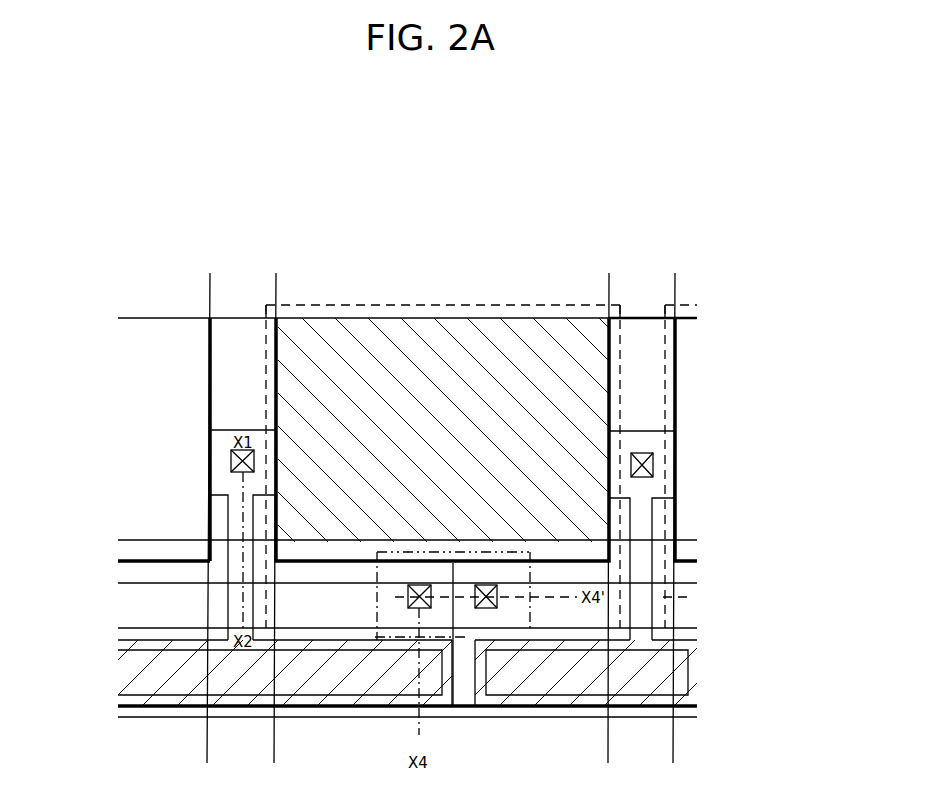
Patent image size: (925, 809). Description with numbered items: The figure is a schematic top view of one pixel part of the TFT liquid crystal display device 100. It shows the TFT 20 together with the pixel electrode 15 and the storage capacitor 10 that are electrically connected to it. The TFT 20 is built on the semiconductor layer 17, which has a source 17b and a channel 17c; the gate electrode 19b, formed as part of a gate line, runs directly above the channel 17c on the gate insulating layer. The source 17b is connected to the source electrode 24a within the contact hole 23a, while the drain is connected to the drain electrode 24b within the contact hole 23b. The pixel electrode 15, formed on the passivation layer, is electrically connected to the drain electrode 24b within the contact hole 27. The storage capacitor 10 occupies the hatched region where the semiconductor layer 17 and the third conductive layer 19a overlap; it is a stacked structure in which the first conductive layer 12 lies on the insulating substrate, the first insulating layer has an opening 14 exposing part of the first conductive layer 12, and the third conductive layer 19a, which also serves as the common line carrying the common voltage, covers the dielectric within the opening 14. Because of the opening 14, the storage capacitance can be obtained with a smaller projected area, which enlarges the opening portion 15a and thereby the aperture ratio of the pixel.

The TFT liquid crystal display device 100 is at (658, 261).
The source electrode 24a is at (216, 290).
The opening portion 15a is at (481, 328).
The pixel electrode 15 is at (620, 393).
The source 17b is at (228, 485).
The contact hole 23a is at (231, 461).
The channel 17c is at (237, 532).
The TFT 20 is at (220, 552).
The gate electrode 19b is at (128, 548).
The first conductive layer 12 is at (128, 578).
The third conductive layer 19a is at (128, 633).
The contact hole 23b is at (432, 592).
The contact hole 27 is at (497, 590).
The drain electrode 24b is at (530, 617).
The semiconductor layer 17 is at (173, 708).
The storage capacitor 10 is at (311, 700).
The opening 14 is at (358, 683).